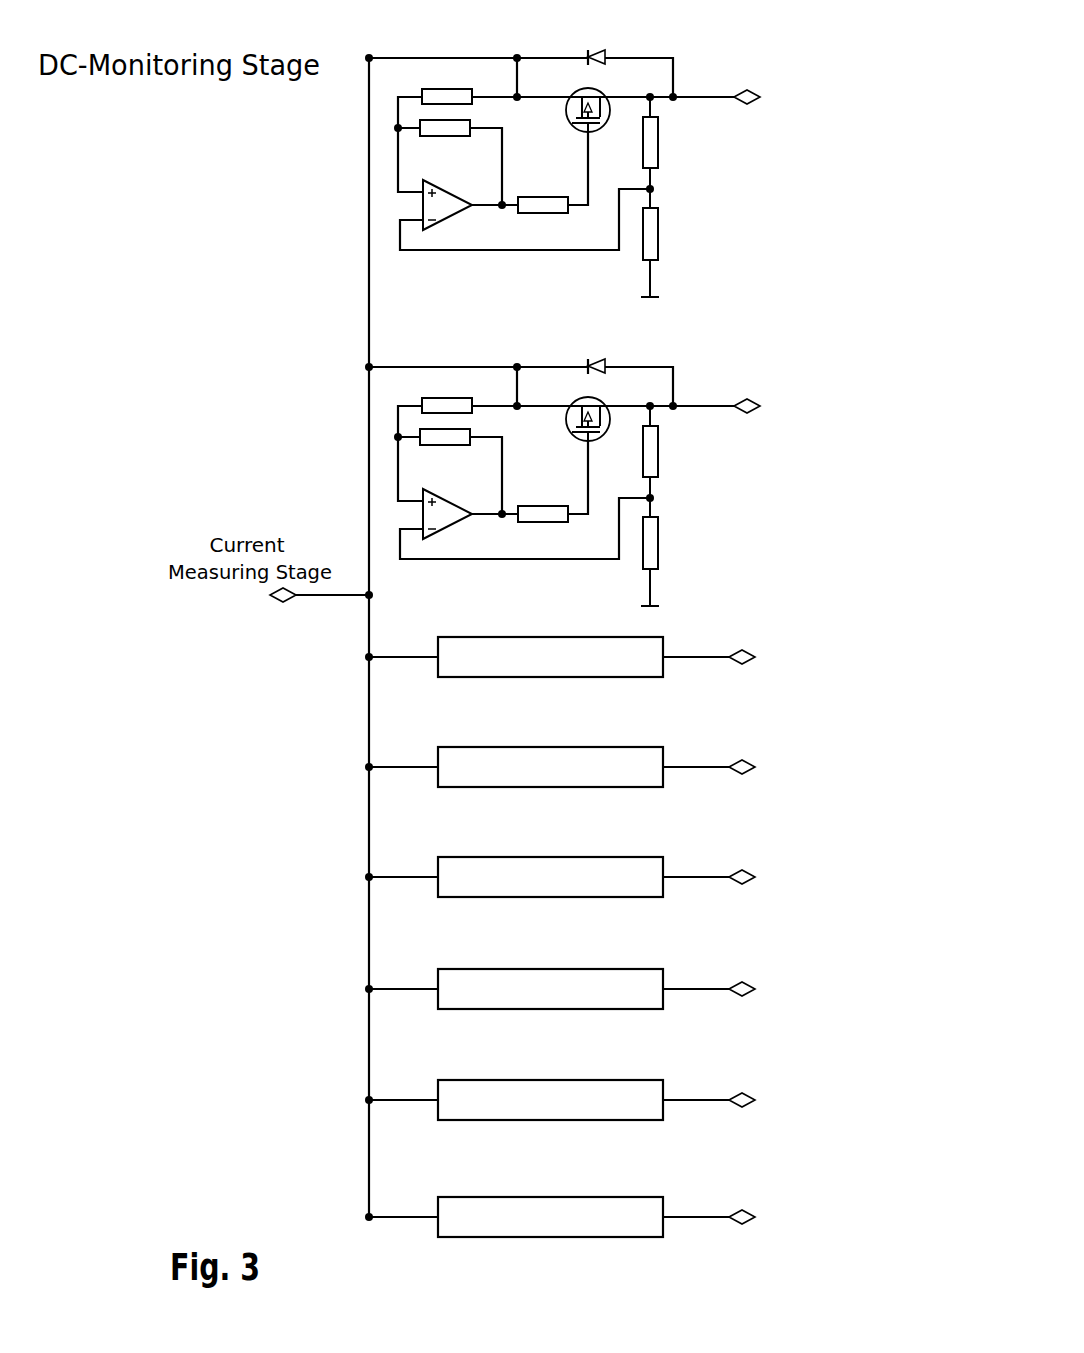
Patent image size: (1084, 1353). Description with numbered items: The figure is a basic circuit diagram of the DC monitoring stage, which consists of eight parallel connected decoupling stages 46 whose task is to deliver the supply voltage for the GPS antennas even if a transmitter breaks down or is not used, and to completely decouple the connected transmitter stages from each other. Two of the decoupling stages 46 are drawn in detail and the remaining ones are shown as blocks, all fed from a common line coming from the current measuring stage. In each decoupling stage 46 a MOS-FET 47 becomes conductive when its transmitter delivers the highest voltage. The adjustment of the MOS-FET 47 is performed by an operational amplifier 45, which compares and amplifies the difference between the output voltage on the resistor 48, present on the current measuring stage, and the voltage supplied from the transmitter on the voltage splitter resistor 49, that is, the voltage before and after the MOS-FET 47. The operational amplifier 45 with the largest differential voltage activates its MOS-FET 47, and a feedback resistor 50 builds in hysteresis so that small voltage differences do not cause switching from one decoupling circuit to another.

The operational amplifier 45 is at (440, 203).
The decoupling stage 46 is at (603, 643).
The MOS-FET 47 is at (580, 137).
The resistor 48 is at (458, 94).
The voltage splitter resistor 49 is at (652, 237).
The feedback resistor 50 is at (443, 127).